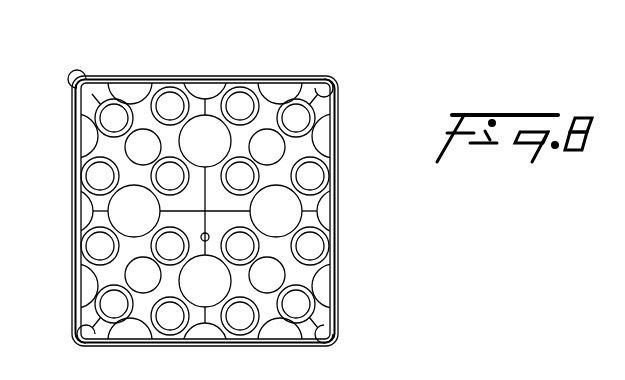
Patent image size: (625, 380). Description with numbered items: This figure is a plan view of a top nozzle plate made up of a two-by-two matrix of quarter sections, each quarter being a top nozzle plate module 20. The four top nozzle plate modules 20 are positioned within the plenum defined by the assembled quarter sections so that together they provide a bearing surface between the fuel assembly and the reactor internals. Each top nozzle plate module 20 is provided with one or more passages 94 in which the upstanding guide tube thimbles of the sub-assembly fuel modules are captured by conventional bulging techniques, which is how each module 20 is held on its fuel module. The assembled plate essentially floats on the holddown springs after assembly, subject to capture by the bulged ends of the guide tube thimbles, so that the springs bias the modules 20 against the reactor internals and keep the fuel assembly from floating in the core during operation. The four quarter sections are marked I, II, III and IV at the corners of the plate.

The top nozzle plate module 20 is at (273, 82).
The passage 94 is at (170, 87).
The section line I is at (130, 54).
The section line II is at (245, 54).
The section line III is at (326, 312).
The section line IV is at (84, 306).